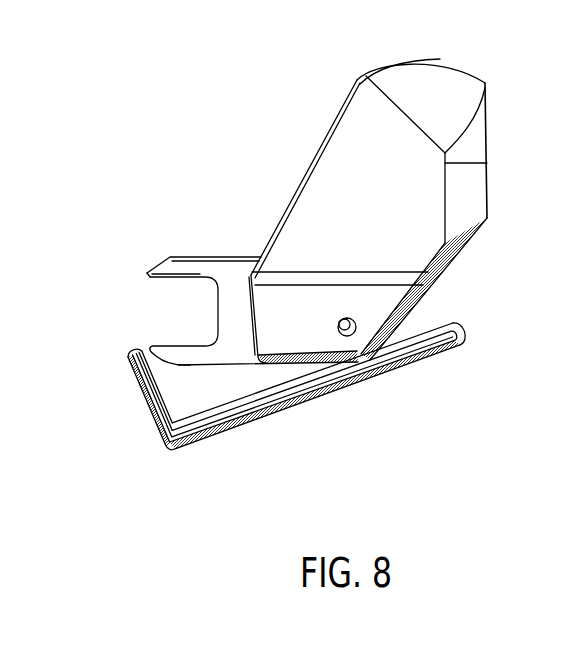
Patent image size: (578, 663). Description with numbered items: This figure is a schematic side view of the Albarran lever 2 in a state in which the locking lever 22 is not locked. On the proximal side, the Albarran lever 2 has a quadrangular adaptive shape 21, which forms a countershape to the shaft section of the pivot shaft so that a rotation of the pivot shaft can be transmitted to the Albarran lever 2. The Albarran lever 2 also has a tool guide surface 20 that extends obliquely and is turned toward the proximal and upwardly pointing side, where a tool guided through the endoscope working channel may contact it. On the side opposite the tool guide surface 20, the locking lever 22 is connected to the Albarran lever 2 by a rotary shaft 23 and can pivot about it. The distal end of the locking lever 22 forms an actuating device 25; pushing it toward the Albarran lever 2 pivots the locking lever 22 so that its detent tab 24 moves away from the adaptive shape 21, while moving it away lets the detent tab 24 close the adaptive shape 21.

The Albarran lever 2 is at (427, 203).
The tool guide surface 20 is at (340, 113).
The adaptive shape 21 is at (213, 310).
The locking lever 22 is at (312, 398).
The rotary shaft 23 is at (348, 333).
The detent tab 24 is at (153, 405).
The actuating device 25 is at (448, 345).